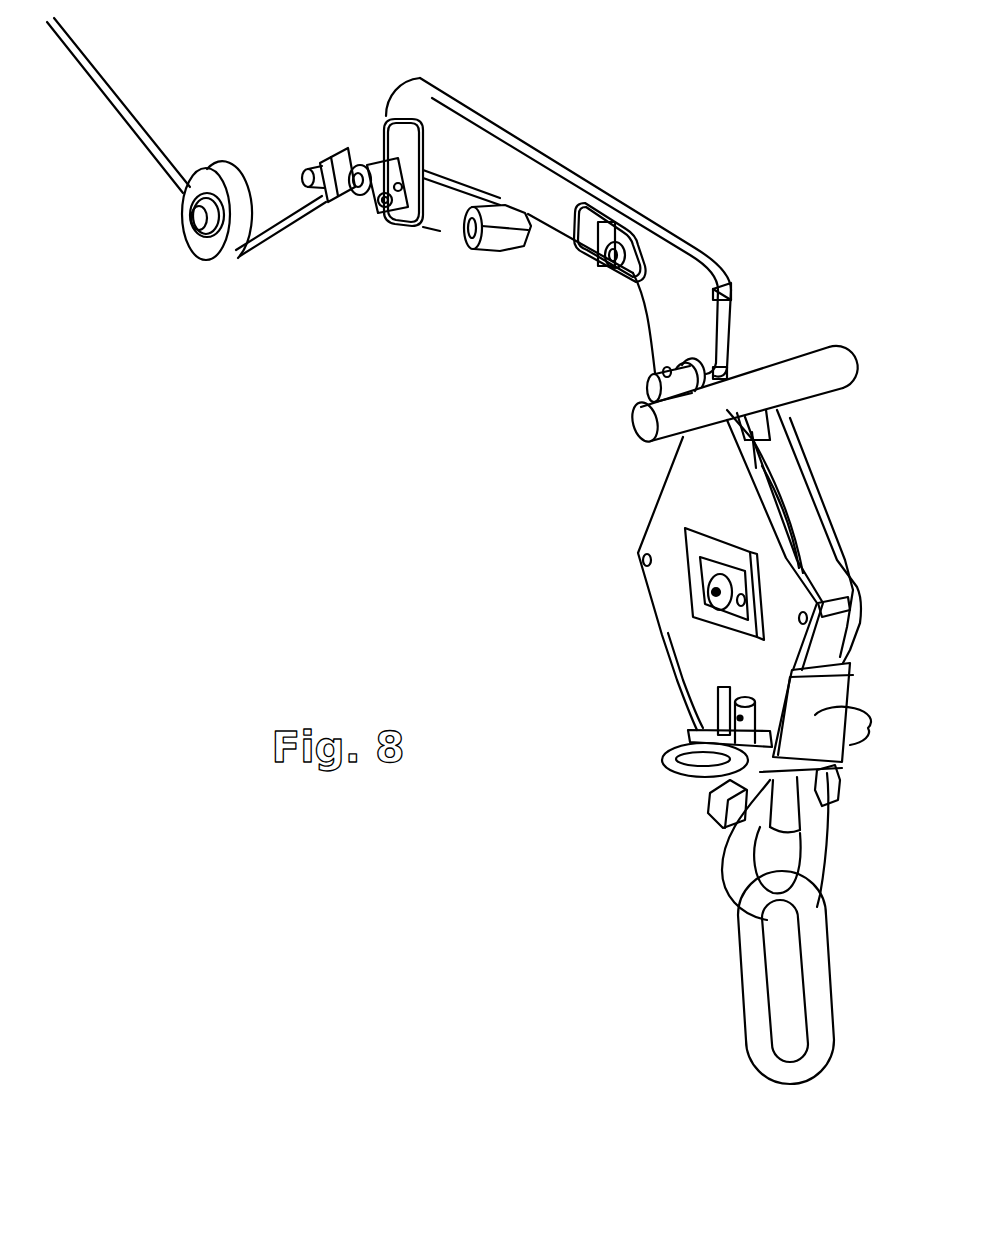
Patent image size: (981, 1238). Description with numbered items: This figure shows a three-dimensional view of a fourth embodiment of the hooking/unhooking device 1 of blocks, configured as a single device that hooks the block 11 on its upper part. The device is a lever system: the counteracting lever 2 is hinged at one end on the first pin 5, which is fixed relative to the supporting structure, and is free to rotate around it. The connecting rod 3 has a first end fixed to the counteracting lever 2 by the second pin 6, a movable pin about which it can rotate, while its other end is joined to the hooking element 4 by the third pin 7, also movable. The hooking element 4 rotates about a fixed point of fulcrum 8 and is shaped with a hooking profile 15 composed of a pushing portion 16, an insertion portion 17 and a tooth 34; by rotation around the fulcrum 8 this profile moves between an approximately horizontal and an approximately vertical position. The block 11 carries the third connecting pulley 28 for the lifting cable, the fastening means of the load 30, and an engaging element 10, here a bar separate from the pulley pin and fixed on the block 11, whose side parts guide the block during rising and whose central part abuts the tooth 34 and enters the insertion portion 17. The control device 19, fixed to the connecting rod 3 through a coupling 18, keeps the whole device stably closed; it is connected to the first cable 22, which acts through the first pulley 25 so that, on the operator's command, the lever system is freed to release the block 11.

The hooking/unhooking device 1 is at (350, 374).
The counteracting lever 2 is at (435, 232).
The connecting rod 3 is at (546, 233).
The hooking element 4 is at (650, 328).
The first pin 5 is at (468, 229).
The second pin 6 is at (385, 201).
The third pin 7 is at (608, 256).
The point of fulcrum 8 is at (654, 388).
The engaging element 10 is at (645, 421).
The block 11 is at (742, 740).
The hooking profile 15 is at (847, 176).
The pushing portion 16 is at (722, 295).
The insertion portion 17 is at (720, 373).
The coupling 18 is at (355, 177).
The control device 19 is at (317, 167).
The first cable 22 is at (115, 113).
The first pulley 25 is at (200, 177).
The third connecting pulley 28 is at (805, 543).
The fastening means of the load 30 is at (747, 950).
The tooth 34 is at (755, 419).